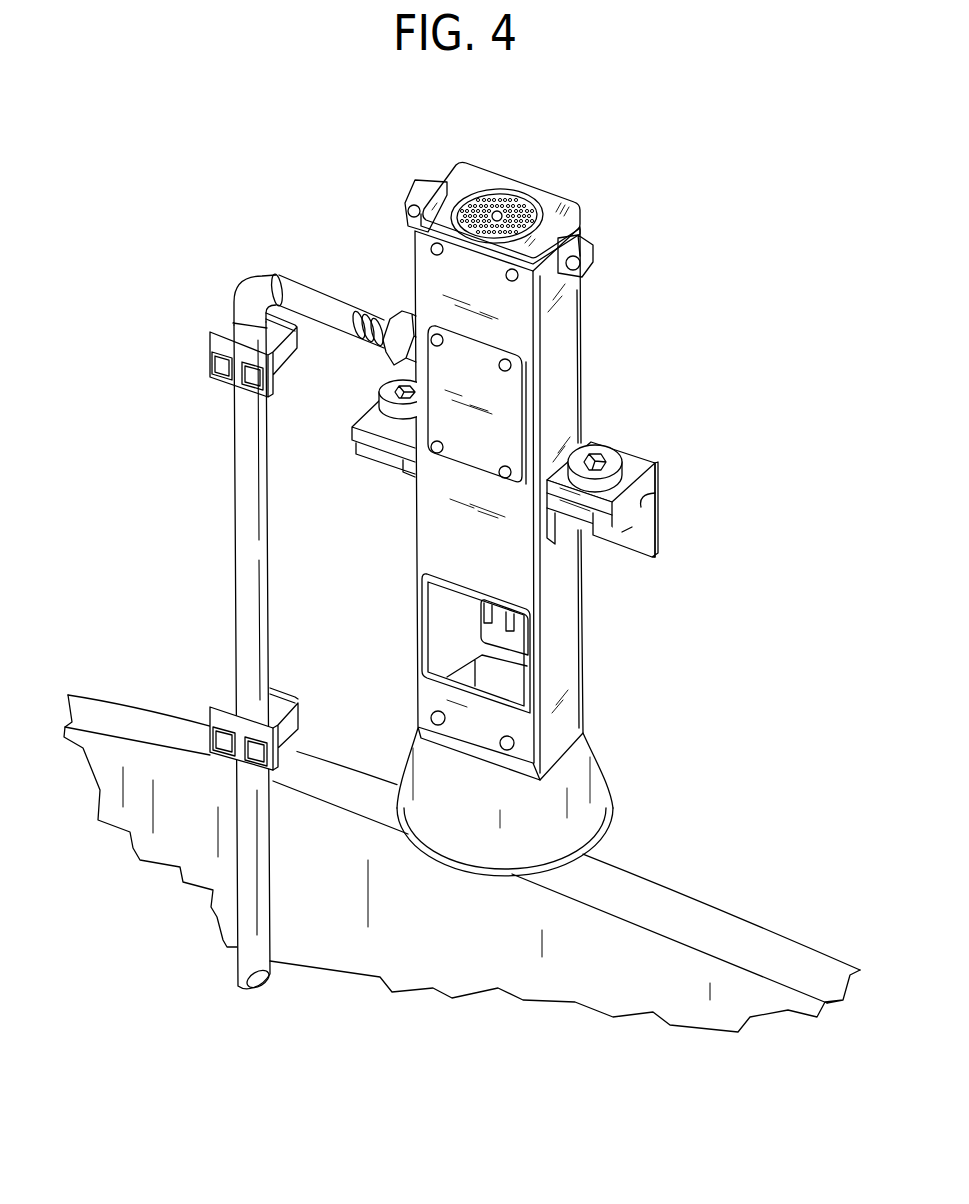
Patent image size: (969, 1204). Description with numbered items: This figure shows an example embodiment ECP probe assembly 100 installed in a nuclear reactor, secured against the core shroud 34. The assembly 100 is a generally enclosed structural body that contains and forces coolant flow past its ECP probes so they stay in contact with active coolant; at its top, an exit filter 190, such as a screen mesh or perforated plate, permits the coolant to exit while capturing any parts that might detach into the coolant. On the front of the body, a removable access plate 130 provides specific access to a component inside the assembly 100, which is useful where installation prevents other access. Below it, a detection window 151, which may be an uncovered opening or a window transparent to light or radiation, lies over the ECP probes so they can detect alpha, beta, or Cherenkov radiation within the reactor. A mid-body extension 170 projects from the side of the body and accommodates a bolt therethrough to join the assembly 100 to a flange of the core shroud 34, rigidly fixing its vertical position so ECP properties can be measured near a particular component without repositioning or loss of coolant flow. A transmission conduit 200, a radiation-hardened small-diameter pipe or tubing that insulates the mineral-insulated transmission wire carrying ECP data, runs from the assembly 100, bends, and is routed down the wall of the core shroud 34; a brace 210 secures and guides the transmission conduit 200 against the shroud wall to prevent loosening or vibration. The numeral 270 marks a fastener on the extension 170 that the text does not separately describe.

The ECP probe assembly 100 is at (444, 522).
The access plate 130 is at (503, 403).
The detection window 151 is at (424, 638).
The mid-body extension 170 is at (650, 488).
The exit filter 190 is at (470, 201).
The transmission conduit 200 is at (267, 283).
The brace 210 is at (303, 722).
The bracket bolt 270 is at (632, 452).
The core shroud 34 is at (761, 663).